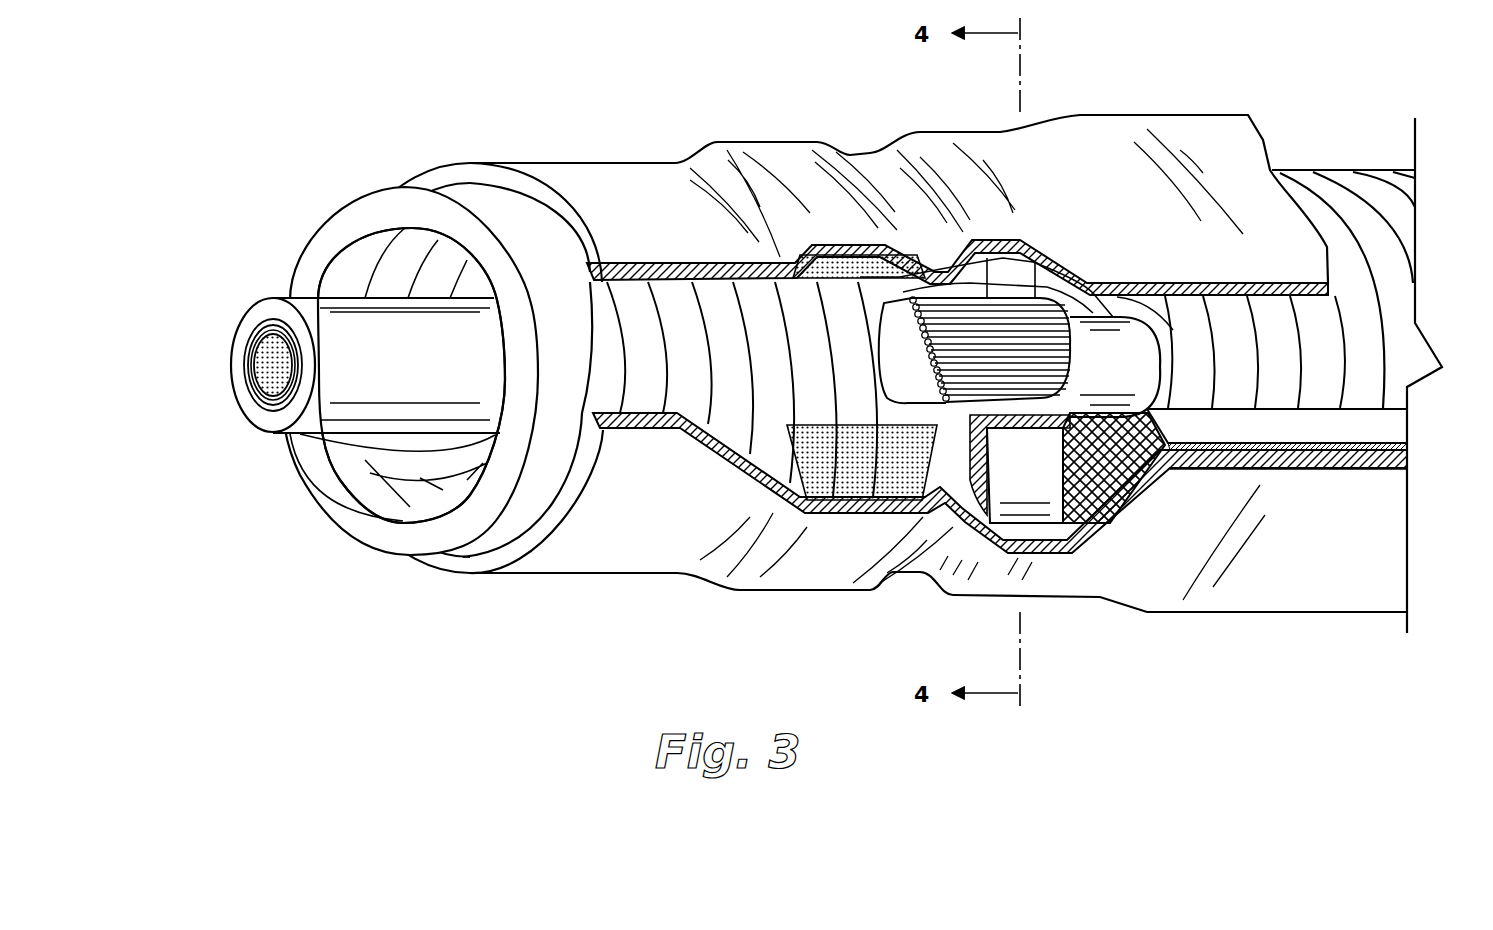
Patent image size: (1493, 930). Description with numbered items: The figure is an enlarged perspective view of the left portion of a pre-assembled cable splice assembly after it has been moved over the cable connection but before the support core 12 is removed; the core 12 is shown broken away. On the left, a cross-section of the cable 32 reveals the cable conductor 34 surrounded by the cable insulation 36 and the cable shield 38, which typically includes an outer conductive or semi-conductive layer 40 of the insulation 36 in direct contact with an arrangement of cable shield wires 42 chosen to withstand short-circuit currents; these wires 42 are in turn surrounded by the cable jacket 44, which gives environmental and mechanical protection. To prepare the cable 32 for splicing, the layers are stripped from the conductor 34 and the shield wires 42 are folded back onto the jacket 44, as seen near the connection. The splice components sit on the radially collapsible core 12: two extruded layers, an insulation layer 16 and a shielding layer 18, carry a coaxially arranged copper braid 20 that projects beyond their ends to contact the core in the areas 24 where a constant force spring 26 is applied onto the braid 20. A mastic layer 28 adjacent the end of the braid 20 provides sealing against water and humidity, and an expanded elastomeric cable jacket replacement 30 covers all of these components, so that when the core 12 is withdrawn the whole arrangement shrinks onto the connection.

The support core 12 is at (1311, 152).
The insulation layer 16 is at (1385, 420).
The shielding layer 18 is at (1291, 450).
The copper braid 20 is at (1113, 483).
The areas adjacent both ends of the extruded layers 24 is at (1030, 425).
The constant force spring 26 is at (1027, 486).
The mastic layer 28 is at (860, 497).
The cable jacket replacement 30 is at (1095, 191).
The cable 32 is at (220, 408).
The cable conductor 34 is at (280, 334).
The cable insulation 36 is at (258, 312).
The cable shield 38 is at (230, 357).
The outer conductive or semi-conductive layer 40 is at (240, 327).
The cable shield wires 42 is at (240, 377).
The cable jacket 44 is at (927, 366).